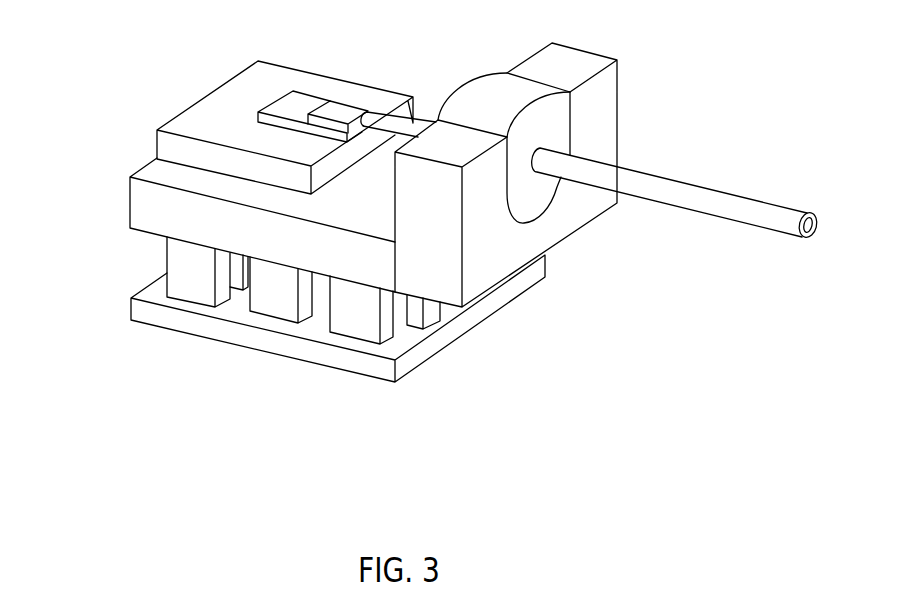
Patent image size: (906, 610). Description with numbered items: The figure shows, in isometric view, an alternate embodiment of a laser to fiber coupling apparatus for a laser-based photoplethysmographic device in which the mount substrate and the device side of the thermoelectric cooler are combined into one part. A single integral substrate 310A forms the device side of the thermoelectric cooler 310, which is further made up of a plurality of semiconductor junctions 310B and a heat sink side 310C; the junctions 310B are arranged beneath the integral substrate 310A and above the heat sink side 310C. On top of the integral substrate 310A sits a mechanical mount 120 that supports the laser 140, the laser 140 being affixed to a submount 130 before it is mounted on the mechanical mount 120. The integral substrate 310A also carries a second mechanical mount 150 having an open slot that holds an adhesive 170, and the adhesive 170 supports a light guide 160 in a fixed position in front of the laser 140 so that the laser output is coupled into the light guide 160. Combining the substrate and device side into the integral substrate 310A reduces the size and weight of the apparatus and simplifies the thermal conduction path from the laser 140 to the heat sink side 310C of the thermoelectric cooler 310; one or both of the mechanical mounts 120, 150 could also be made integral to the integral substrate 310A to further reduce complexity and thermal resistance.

The mechanical mount 120 is at (172, 150).
The submount 130 is at (282, 107).
The laser 140 is at (328, 107).
The second mechanical mount 150 is at (543, 63).
The light guide 160 is at (713, 177).
The adhesive 170 is at (532, 197).
The thermoelectric cooler 310 is at (113, 268).
The integral substrate 310A is at (148, 203).
The semiconductor junctions 310B is at (280, 298).
The heat sink side 310C is at (320, 355).